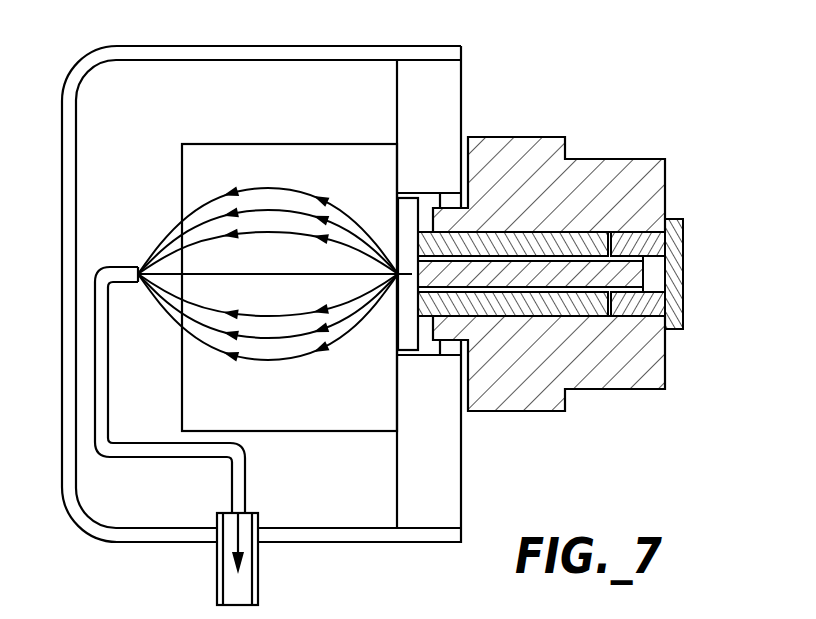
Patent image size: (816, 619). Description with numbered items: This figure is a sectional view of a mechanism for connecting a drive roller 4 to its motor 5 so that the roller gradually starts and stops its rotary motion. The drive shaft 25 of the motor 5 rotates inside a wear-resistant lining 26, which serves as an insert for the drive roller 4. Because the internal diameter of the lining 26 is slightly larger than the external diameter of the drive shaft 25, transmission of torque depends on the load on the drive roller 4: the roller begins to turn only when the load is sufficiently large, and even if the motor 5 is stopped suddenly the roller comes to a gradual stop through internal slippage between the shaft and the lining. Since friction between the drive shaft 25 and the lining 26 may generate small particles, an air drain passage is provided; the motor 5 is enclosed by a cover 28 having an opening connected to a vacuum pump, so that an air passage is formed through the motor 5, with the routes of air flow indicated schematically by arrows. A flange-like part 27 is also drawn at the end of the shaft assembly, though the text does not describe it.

The drive roller 4 is at (540, 137).
The motor 5 is at (239, 144).
The drive shaft 25 is at (587, 279).
The wear-resistant lining 26 is at (538, 307).
The flange 27 is at (684, 314).
The cover 28 is at (342, 60).